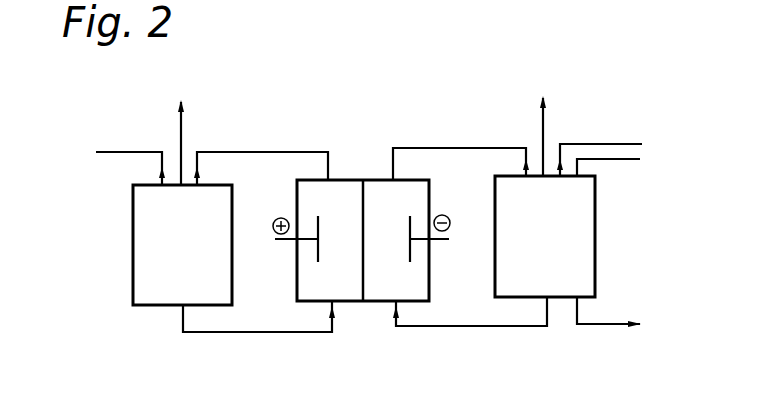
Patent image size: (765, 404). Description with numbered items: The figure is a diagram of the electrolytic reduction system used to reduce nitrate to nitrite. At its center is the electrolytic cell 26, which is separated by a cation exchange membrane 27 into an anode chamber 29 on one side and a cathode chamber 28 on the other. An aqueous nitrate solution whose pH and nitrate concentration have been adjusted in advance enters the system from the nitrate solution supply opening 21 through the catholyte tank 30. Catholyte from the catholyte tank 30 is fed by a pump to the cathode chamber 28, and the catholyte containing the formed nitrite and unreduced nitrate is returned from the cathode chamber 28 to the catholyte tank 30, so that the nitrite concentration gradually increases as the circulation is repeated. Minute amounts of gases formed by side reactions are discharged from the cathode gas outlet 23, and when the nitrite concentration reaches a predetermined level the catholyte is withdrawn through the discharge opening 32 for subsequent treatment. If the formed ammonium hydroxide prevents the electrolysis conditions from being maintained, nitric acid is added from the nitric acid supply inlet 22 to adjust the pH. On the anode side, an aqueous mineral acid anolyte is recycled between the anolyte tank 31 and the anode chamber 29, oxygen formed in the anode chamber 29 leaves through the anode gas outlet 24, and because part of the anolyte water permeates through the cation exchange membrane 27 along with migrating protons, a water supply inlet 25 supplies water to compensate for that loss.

The nitrate solution supply opening 21 is at (600, 145).
The nitric acid supply inlet 22 is at (617, 175).
The cathode gas outlet 23 is at (561, 126).
The anode gas outlet 24 is at (198, 136).
The water supply inlet 25 is at (130, 156).
The electrolytic cell 26 is at (350, 179).
The cation exchange membrane 27 is at (365, 292).
The cathode chamber 28 is at (430, 282).
The anode chamber 29 is at (297, 283).
The catholyte tank 30 is at (596, 232).
The anolyte tank 31 is at (133, 240).
The discharge opening 32 is at (582, 300).